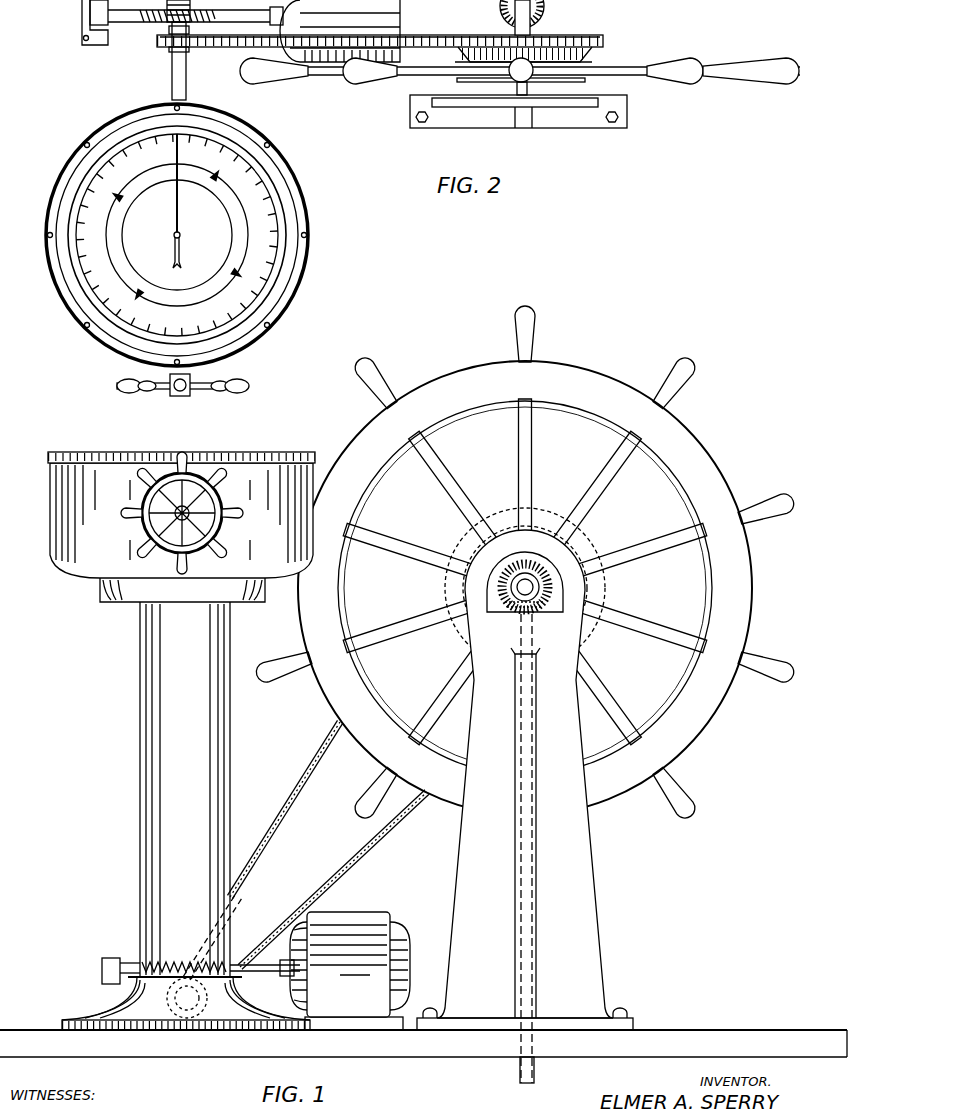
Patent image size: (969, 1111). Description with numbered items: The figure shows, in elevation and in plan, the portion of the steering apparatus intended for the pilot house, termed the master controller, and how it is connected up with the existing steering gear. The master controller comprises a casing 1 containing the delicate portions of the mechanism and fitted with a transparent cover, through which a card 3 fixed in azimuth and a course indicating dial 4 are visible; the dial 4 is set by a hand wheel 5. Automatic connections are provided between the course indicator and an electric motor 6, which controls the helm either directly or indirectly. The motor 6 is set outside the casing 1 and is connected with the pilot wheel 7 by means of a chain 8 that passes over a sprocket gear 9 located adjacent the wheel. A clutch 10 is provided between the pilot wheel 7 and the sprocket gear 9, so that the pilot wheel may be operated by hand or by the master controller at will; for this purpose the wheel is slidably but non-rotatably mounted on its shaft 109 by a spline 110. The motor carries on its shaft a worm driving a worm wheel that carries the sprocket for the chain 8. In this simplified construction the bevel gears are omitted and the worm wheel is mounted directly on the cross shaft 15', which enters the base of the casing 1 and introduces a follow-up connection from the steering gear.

In FIG. 2, the casing 1 is at (86, 148).
In FIG. 1, the casing 1 is at (52, 512).
In FIG. 2, the card 3 is at (177, 235).
In FIG. 2, the course indicating dial 4 is at (184, 214).
In FIG. 2, the hand wheel 5 is at (118, 385).
In FIG. 1, the hand wheel 5 is at (223, 485).
In FIG. 2, the electric motor 6 is at (400, 8).
In FIG. 1, the electric motor 6 is at (320, 971).
In FIG. 2, the pilot wheel 7 is at (718, 78).
In FIG. 1, the pilot wheel 7 is at (700, 462).
In FIG. 2, the chain 8 is at (226, 48).
In FIG. 1, the chain 8 is at (396, 822).
In FIG. 2, the sprocket gear 9 is at (590, 36).
In FIG. 1, the sprocket gear 9 is at (590, 541).
In FIG. 2, the clutch 10 is at (588, 63).
In FIG. 2, the cross shaft 15' is at (163, 50).
In FIG. 2, the shaft 109 is at (506, 12).
In FIG. 2, the spline 110 is at (527, 88).